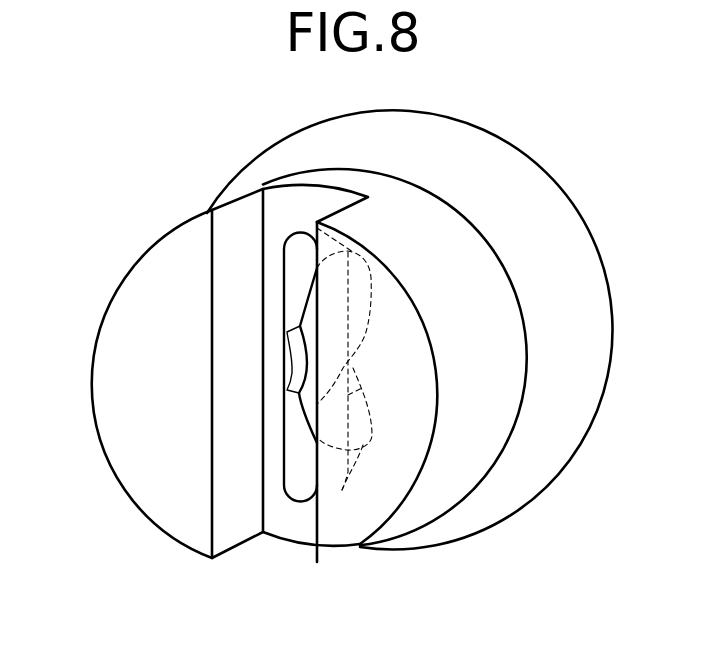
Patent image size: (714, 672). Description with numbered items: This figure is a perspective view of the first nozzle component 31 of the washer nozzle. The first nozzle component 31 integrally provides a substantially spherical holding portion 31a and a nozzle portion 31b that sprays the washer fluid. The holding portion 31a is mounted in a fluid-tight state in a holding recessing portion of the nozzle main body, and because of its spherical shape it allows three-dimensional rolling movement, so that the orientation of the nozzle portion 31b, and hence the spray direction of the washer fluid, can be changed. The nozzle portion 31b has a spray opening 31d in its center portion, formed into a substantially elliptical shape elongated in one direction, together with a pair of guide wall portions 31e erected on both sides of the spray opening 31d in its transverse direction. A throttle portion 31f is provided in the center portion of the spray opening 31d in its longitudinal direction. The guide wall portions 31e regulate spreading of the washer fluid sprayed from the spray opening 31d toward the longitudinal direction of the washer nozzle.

The first nozzle component 31 is at (652, 130).
The holding portion 31a is at (493, 152).
The nozzle portion 31b is at (112, 295).
The spray opening 31d is at (298, 261).
The guide wall portions 31e is at (337, 530).
The throttle portion 31f is at (317, 404).